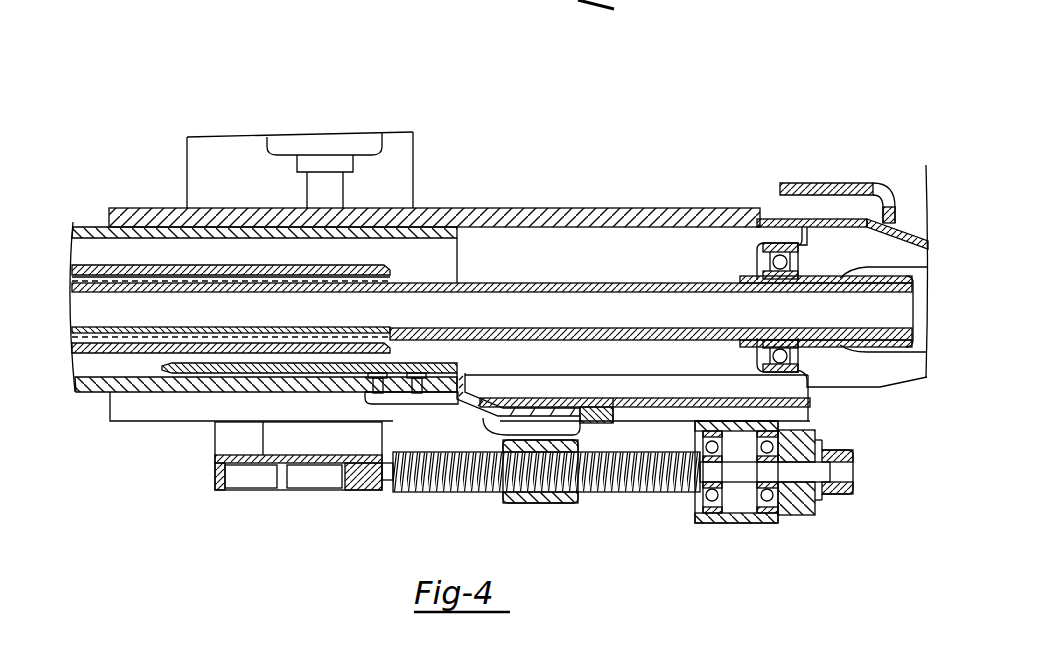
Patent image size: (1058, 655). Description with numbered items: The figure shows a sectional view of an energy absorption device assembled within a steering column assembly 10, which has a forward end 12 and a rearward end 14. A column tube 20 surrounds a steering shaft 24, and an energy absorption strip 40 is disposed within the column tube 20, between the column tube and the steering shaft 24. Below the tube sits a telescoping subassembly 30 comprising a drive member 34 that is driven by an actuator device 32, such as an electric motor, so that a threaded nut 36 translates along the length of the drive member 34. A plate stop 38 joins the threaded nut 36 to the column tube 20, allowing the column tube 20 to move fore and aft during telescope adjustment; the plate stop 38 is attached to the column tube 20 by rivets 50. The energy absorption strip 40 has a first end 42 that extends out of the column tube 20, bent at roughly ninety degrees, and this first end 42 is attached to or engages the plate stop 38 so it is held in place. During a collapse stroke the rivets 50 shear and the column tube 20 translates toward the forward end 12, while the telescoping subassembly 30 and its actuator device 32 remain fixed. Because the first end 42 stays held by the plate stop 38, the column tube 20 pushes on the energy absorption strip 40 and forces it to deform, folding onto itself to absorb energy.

The steering column assembly 10 is at (175, 68).
The forward end 12 is at (898, 148).
The rearward end 14 is at (69, 395).
The column tube 20 is at (417, 230).
The steering shaft 24 is at (101, 300).
The telescoping subassembly 30 is at (776, 544).
The actuator device 32 is at (828, 470).
The drive member 34 is at (672, 493).
The threaded nut 36 is at (568, 503).
The plate stop 38 is at (487, 420).
The energy absorption strip 40 is at (256, 370).
The first end 42 is at (460, 412).
The rivets 50 is at (418, 385).